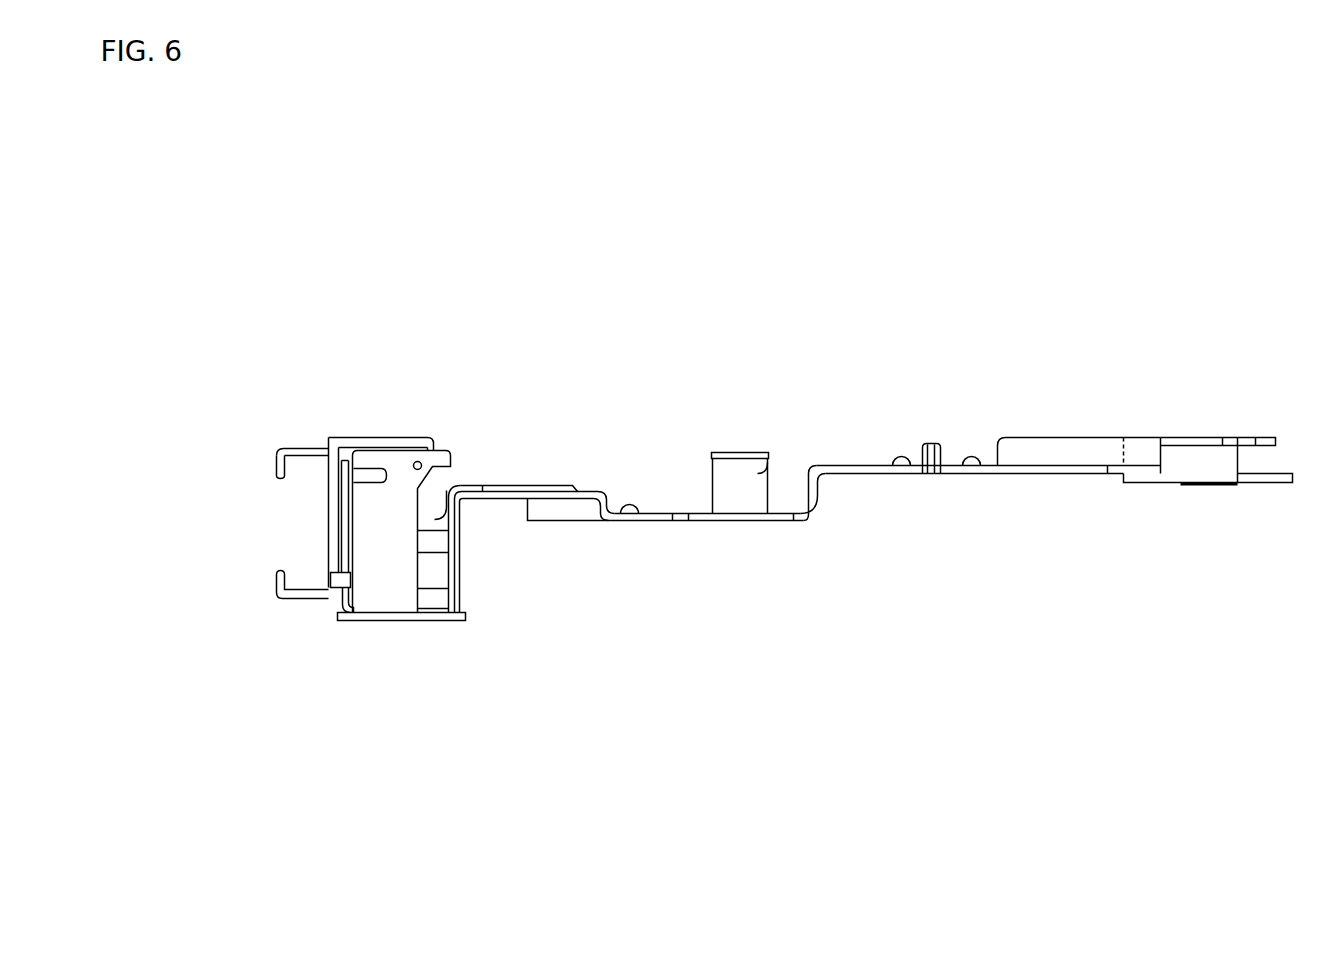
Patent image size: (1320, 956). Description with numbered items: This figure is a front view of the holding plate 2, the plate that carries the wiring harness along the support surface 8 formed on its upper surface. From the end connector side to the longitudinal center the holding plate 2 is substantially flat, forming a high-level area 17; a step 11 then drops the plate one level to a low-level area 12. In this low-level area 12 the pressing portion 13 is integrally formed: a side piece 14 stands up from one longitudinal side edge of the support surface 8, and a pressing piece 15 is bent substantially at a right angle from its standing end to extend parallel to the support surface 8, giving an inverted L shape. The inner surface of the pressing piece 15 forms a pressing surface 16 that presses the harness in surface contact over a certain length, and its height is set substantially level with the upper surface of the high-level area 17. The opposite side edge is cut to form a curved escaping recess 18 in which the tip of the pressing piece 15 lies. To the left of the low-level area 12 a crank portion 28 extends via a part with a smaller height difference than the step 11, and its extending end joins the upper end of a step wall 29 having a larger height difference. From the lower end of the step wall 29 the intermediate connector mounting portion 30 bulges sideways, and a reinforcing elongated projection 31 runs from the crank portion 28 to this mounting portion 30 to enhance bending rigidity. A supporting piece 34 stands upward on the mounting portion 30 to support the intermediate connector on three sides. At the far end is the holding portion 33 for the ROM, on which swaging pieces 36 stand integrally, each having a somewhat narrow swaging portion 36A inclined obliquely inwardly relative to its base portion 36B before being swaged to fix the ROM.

The holding plate 2 is at (890, 380).
The support surface 8 is at (908, 471).
The step 11 is at (820, 493).
The low-level area 12 is at (634, 505).
The pressing portion 13 is at (739, 439).
The side piece 14 is at (718, 483).
The pressing piece 15 is at (722, 450).
The pressing surface 16 is at (769, 460).
The high-level area 17 is at (978, 471).
The escaping recess 18 is at (728, 515).
The crank portion 28 is at (512, 495).
The step wall 29 is at (460, 550).
The intermediate connector mounting portion 30 is at (432, 613).
The reinforcing elongated projection 31 is at (470, 487).
The holding portion 33 is at (330, 517).
The supporting piece 34 is at (387, 588).
The swaging piece 36 is at (305, 593).
The swaging portion 36A is at (277, 472).
The base portion 36B is at (305, 450).